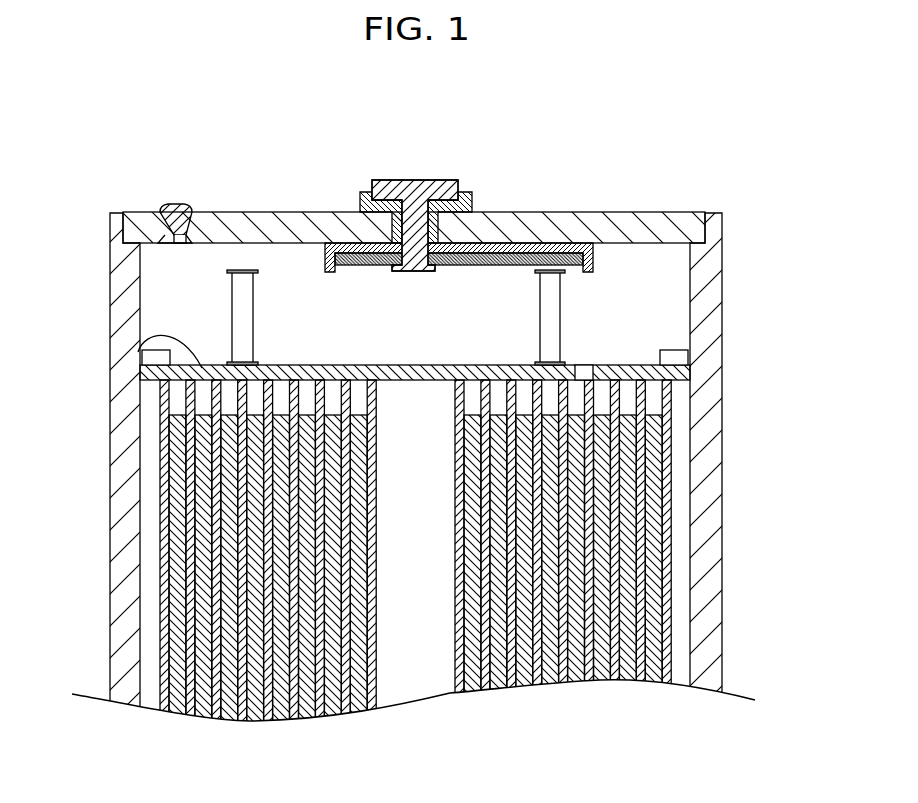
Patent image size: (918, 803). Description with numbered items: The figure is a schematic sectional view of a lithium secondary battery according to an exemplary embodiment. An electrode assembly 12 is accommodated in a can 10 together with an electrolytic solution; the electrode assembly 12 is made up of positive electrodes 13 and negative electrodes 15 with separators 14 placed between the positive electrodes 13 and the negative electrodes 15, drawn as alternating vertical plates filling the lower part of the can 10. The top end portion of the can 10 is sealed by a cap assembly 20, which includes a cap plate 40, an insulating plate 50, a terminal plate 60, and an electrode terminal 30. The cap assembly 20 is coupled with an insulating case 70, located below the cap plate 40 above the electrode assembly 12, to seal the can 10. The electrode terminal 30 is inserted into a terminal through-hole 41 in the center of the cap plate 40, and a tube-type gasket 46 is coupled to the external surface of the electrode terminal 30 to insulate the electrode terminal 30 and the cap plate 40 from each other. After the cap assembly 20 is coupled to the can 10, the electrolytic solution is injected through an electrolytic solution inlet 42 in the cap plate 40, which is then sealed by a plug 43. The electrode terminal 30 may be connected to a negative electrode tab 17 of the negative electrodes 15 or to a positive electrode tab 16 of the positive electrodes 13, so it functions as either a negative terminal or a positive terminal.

The can 10 is at (710, 575).
The electrode assembly 12 is at (472, 573).
The positive electrodes 13 is at (648, 683).
The separators 14 is at (665, 685).
The negative electrodes 15 is at (633, 683).
The positive electrode tab 16 is at (235, 290).
The negative electrode tab 17 is at (555, 323).
The cap assembly 20 is at (436, 204).
The electrode terminal 30 is at (415, 180).
The cap plate 40 is at (639, 212).
The terminal through-hole 41 is at (393, 230).
The electrolytic solution inlet 42 is at (163, 233).
The plug 43 is at (176, 205).
The tube-type gasket 46 is at (468, 194).
The insulating plate 50 is at (593, 272).
The terminal plate 60 is at (484, 268).
The insulating case 70 is at (140, 352).